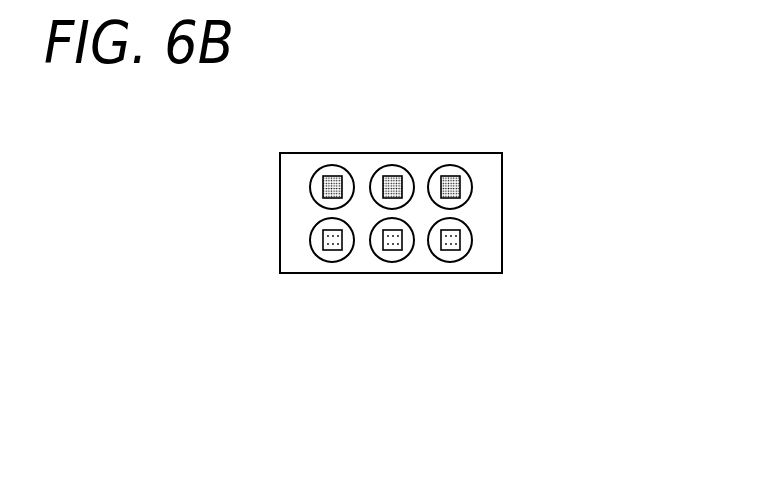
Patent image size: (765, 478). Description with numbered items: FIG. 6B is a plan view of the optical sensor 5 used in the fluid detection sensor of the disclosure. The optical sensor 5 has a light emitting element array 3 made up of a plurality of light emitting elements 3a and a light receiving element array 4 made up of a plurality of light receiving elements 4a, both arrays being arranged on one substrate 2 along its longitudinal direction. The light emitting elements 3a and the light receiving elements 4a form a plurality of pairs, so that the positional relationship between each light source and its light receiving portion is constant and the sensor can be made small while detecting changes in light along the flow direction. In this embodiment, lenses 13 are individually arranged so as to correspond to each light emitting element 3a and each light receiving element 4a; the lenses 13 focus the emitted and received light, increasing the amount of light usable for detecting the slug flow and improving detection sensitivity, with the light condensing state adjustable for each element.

The substrate 2 is at (302, 170).
The light emitting element array 3 is at (389, 309).
The light emitting element 3a is at (458, 330).
The light receiving element array 4 is at (394, 121).
The light receiving element 4a is at (478, 95).
The optical sensor 5 is at (405, 185).
The lens 13 is at (471, 229).